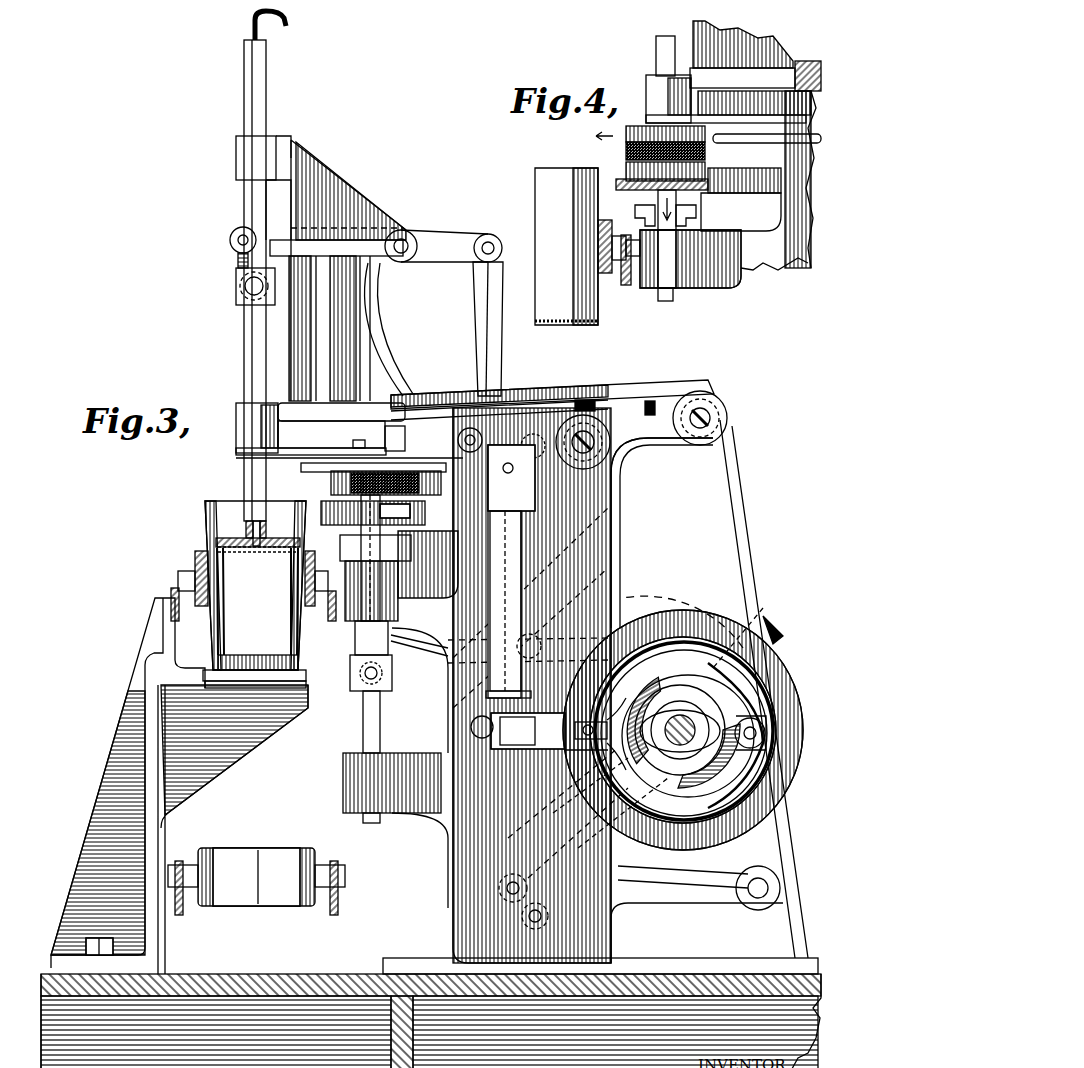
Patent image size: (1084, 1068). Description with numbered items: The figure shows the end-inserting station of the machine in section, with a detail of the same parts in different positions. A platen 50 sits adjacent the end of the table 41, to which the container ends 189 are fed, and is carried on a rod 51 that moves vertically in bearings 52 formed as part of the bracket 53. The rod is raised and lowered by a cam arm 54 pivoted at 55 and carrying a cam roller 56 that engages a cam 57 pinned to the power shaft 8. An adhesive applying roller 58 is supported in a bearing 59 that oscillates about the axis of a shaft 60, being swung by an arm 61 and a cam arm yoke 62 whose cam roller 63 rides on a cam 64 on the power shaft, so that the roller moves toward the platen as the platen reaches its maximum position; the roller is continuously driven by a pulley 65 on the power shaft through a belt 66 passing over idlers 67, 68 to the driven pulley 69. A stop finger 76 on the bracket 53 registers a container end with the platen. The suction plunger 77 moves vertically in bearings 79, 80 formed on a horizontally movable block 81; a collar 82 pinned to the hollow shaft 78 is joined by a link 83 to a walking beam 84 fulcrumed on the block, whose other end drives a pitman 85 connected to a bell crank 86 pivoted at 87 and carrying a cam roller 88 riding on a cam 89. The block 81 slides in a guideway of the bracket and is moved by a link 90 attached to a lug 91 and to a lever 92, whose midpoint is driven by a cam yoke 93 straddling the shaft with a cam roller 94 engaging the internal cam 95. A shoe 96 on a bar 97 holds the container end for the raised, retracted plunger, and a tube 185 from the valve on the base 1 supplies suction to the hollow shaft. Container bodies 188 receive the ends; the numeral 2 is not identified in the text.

In FIG. 3, the base 1 is at (305, 975).
In FIG. 3, the screw 2 is at (256, 881).
In FIG. 4, the screw 2 is at (620, 270).
In FIG. 3, the power shaft 8 is at (680, 715).
In FIG. 3, the table 41 is at (318, 510).
In FIG. 4, the table 41 is at (690, 160).
In FIG. 3, the platen 50 is at (300, 500).
In FIG. 4, the platen 50 is at (618, 160).
In FIG. 3, the rod 51 is at (360, 697).
In FIG. 4, the rod 51 is at (652, 293).
In FIG. 3, the bearings 52 is at (340, 615).
In FIG. 4, the bearings 52 is at (690, 280).
In FIG. 3, the bracket 53 is at (600, 525).
In FIG. 4, the bracket 53 is at (755, 258).
In FIG. 3, the cam arm 54 is at (418, 638).
In FIG. 3, the pivot 55 is at (605, 555).
In FIG. 3, the cam roller 56 is at (735, 545).
In FIG. 3, the cam 57 is at (752, 605).
In FIG. 3, the adhesive applying roller 58 is at (400, 480).
In FIG. 3, the bearing 59 is at (383, 430).
In FIG. 3, the shaft 60 is at (500, 555).
In FIG. 3, the arm 61 is at (500, 740).
In FIG. 3, the cam arm yoke 62 is at (579, 793).
In FIG. 3, the cam roller 63 is at (700, 690).
In FIG. 3, the cam 64 is at (608, 820).
In FIG. 3, the pulley 65 is at (686, 615).
In FIG. 3, the belt 66 is at (438, 387).
In FIG. 3, the idler 67 is at (700, 388).
In FIG. 3, the idler 68 is at (588, 412).
In FIG. 3, the driven pulley 69 is at (368, 345).
In FIG. 3, the stop finger 76 is at (428, 564).
In FIG. 3, the suction plunger 77 is at (208, 533).
In FIG. 4, the suction plunger 77 is at (610, 123).
In FIG. 3, the hollow shaft 78 is at (243, 310).
In FIG. 4, the hollow shaft 78 is at (650, 38).
In FIG. 3, the bearing 79 is at (232, 395).
In FIG. 4, the bearing 79 is at (640, 72).
In FIG. 3, the bearing 80 is at (232, 135).
In FIG. 3, the block 81 is at (343, 185).
In FIG. 4, the block 81 is at (750, 40).
In FIG. 3, the collar 82 is at (230, 272).
In FIG. 3, the link 83 is at (225, 238).
In FIG. 3, the walking beam 84 is at (265, 215).
In FIG. 3, the pitman 85 is at (470, 305).
In FIG. 3, the bell crank 86 is at (688, 885).
In FIG. 3, the pivot 87 is at (760, 870).
In FIG. 3, the cam roller 88 is at (758, 730).
In FIG. 3, the cam 89 is at (768, 800).
In FIG. 3, the link 90 is at (500, 398).
In FIG. 3, the lug 91 is at (524, 468).
In FIG. 3, the lever 92 is at (475, 527).
In FIG. 3, the cam yoke 93 is at (585, 745).
In FIG. 3, the cam roller 94 is at (570, 735).
In FIG. 3, the internal cam 95 is at (640, 625).
In FIG. 3, the shoe 96 is at (293, 460).
In FIG. 4, the shoe 96 is at (740, 135).
In FIG. 3, the bar 97 is at (232, 445).
In FIG. 4, the bar 97 is at (640, 112).
In FIG. 3, the tube 185 is at (290, 28).
In FIG. 3, the container body 188 is at (197, 494).
In FIG. 4, the container body 188 is at (545, 182).
In FIG. 3, the container end 189 is at (232, 633).
In FIG. 4, the container end 189 is at (618, 140).